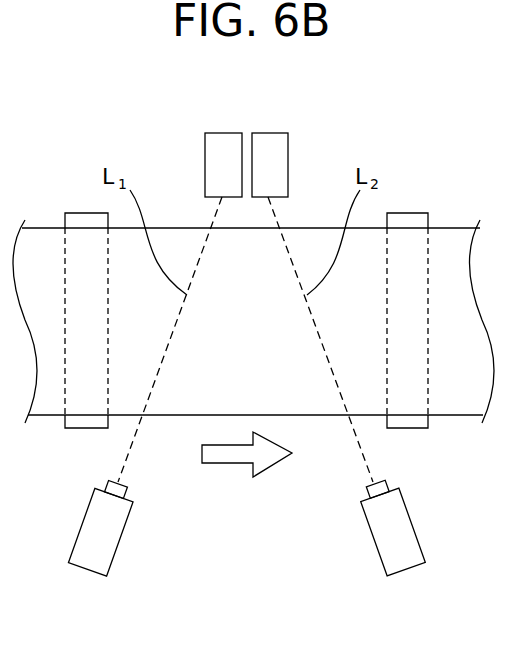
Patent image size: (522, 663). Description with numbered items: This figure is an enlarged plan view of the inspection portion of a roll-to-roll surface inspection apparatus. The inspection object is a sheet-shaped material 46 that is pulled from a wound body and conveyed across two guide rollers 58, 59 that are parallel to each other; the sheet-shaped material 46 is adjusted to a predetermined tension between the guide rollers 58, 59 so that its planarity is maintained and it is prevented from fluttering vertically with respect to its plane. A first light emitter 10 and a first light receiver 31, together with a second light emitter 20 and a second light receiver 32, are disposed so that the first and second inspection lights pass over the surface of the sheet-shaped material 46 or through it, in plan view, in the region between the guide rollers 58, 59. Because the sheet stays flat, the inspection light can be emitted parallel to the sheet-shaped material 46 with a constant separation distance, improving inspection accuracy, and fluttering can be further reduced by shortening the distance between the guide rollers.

The first light emitter 10 is at (88, 557).
The second light emitter 20 is at (402, 557).
The first light receiver 31 is at (222, 133).
The second light receiver 32 is at (268, 133).
The sheet-shaped material 46 is at (452, 250).
The guide roller 58 is at (80, 430).
The guide roller 59 is at (408, 430).